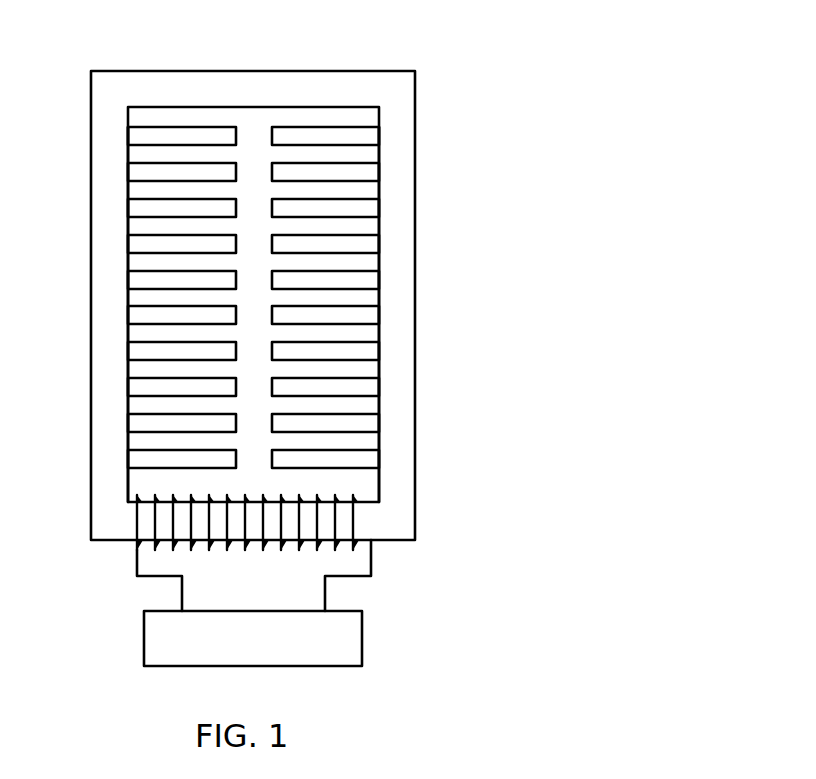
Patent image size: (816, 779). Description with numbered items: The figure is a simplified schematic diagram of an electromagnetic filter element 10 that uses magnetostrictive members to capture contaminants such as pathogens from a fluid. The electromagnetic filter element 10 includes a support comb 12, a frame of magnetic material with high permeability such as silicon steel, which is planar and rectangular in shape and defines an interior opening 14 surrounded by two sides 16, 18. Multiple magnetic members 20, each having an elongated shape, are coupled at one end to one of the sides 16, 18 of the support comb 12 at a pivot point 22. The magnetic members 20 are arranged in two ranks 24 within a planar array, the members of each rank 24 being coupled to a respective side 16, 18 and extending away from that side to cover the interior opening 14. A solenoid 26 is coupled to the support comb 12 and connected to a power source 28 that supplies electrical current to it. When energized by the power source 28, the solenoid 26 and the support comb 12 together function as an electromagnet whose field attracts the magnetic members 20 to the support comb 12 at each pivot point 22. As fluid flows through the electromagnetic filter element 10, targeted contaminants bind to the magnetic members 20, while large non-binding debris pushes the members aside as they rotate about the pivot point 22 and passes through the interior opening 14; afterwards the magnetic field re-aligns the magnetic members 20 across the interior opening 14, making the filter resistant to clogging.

The electromagnetic filter element 10 is at (665, 86).
The support comb 12 is at (397, 142).
The interior opening 14 is at (251, 119).
The side 16 is at (110, 436).
The side 18 is at (402, 438).
The magnetic member 20 is at (299, 252).
The pivot point 22 is at (126, 135).
The rank 24 is at (192, 117).
The solenoid 26 is at (365, 519).
The power source 28 is at (362, 632).